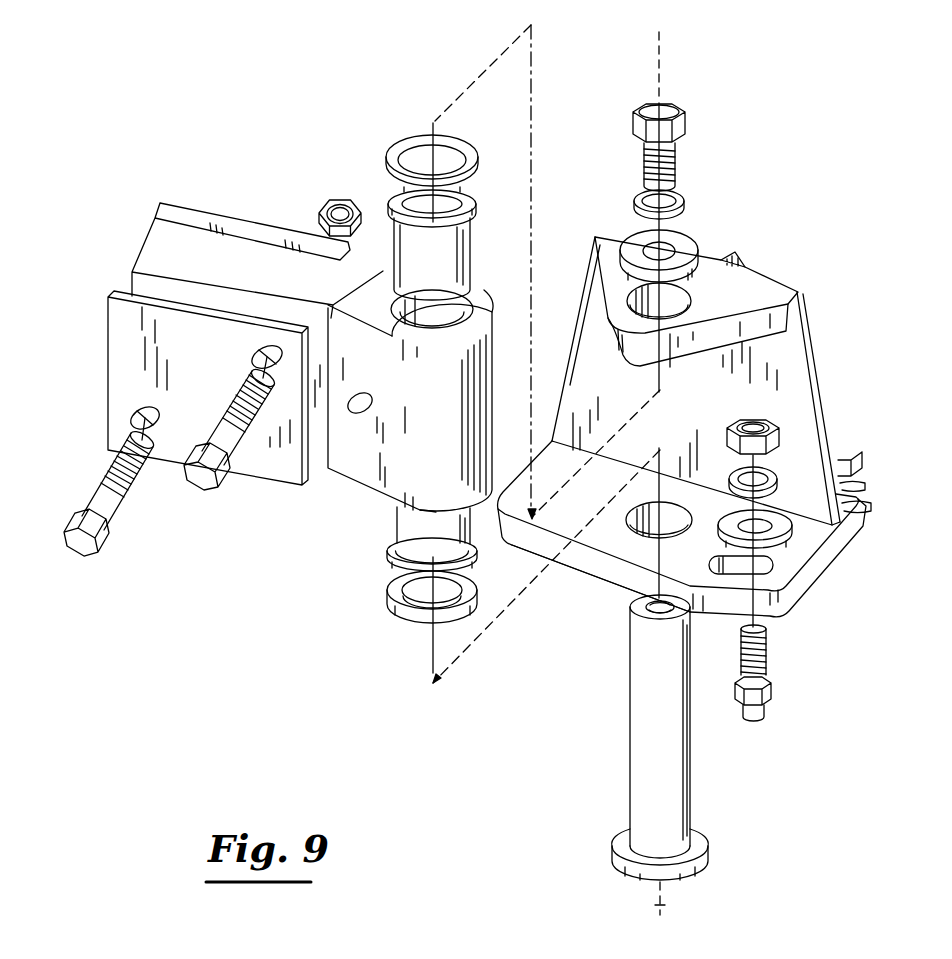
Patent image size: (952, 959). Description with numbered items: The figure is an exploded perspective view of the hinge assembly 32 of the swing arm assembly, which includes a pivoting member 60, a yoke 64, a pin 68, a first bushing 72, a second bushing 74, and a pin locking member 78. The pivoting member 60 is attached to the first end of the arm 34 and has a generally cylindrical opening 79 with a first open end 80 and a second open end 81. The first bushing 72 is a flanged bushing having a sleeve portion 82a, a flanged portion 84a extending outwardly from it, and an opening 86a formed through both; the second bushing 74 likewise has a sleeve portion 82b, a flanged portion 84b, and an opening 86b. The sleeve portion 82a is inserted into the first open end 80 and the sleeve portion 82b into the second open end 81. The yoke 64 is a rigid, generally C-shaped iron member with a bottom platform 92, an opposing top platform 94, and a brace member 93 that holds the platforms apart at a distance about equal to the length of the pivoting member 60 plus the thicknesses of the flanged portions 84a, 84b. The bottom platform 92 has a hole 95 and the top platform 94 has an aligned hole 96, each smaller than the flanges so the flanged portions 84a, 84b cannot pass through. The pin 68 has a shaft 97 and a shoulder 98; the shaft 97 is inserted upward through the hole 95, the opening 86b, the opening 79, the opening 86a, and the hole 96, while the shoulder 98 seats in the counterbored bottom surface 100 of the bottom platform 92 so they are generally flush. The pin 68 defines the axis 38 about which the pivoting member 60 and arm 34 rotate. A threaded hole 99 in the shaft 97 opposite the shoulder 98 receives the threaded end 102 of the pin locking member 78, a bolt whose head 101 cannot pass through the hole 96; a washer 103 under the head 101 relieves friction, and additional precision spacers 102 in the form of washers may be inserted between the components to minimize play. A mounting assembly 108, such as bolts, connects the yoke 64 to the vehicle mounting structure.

The hinge assembly 32 is at (572, 72).
The arm 34 is at (153, 247).
The axis 38 is at (660, 905).
The pivoting member 60 is at (338, 477).
The yoke 64 is at (810, 333).
The pin 68 is at (703, 773).
The first bushing 72 is at (473, 232).
The second bushing 74 is at (383, 550).
The pin locking member 78 is at (750, 73).
The opening 79 is at (452, 313).
The first open end 80 is at (470, 296).
The second open end 81 is at (500, 494).
The sleeve portion 82a is at (390, 240).
The sleeve portion 82b is at (387, 513).
The flanged portion 84a is at (388, 199).
The flanged portion 84b is at (478, 548).
The opening 86a is at (452, 203).
The opening 86b is at (395, 562).
The bottom platform 92 is at (848, 532).
The brace member 93 is at (820, 387).
The top platform 94 is at (780, 292).
The hole 95 is at (627, 520).
The hole 96 is at (690, 297).
The shaft 97 is at (626, 740).
The shoulder 98 is at (702, 858).
The threaded hole 99 is at (637, 608).
The bottom surface 100 is at (786, 609).
The head 101 is at (688, 120).
The threaded end 102 is at (457, 138).
The washer 103 is at (685, 198).
The mounting assembly 108 is at (777, 687).